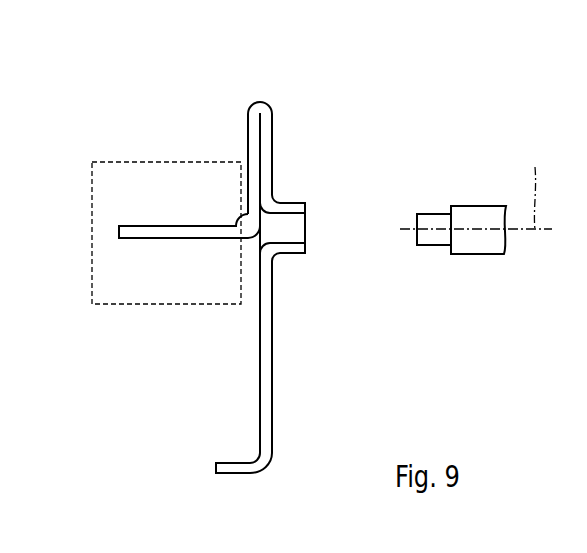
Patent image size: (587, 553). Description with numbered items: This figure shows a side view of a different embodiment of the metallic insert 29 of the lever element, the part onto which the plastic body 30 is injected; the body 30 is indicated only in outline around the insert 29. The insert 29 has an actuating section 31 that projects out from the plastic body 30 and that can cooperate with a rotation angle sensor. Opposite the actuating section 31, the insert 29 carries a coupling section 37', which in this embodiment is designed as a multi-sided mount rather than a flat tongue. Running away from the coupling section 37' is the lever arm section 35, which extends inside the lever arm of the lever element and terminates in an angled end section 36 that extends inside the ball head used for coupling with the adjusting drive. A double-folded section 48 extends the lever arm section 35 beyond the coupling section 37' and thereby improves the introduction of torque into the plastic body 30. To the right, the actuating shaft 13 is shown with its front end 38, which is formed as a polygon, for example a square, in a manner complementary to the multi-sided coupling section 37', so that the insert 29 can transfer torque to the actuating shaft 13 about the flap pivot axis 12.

The insert 29 is at (258, 102).
The double-folded section 48 is at (273, 160).
The actuating section 31 is at (180, 225).
The body 30 is at (167, 304).
The coupling section 37' is at (315, 241).
The lever arm section 35 is at (273, 355).
The angled end section 36 is at (232, 460).
The end of the actuating shaft 38 is at (433, 222).
The actuating shaft 13 is at (478, 206).
The flap pivot axis 12 is at (532, 182).